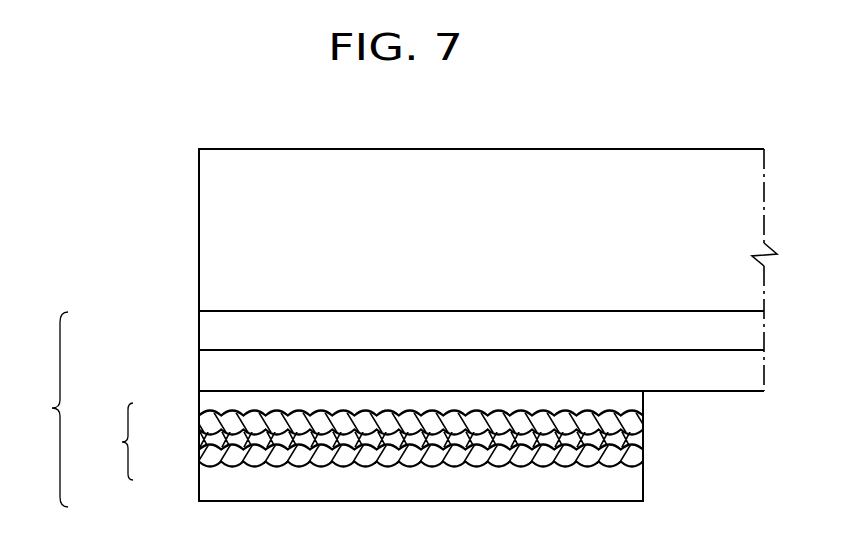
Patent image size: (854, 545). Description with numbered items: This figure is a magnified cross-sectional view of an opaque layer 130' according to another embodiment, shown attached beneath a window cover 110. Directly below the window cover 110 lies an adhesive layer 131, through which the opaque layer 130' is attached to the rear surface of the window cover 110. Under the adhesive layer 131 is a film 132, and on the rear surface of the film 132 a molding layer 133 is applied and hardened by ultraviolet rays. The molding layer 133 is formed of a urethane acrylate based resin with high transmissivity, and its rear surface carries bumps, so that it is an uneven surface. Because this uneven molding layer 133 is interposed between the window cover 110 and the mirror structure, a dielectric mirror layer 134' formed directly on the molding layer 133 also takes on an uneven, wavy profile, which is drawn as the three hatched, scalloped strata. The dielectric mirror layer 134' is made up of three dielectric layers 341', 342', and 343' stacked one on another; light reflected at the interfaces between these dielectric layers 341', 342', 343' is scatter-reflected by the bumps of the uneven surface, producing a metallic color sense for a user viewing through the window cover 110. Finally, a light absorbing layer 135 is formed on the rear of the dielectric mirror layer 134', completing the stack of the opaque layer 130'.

The window cover 110 is at (208, 219).
The opaque layer 130' is at (384, 408).
The adhesive layer 131 is at (208, 327).
The film 132 is at (208, 365).
The molding layer 133 is at (208, 400).
The dielectric mirror layer 134' is at (376, 442).
The dielectric layer 341' is at (403, 416).
The dielectric layer 342' is at (394, 442).
The dielectric layer 343' is at (405, 464).
The light absorbing layer 135 is at (205, 492).